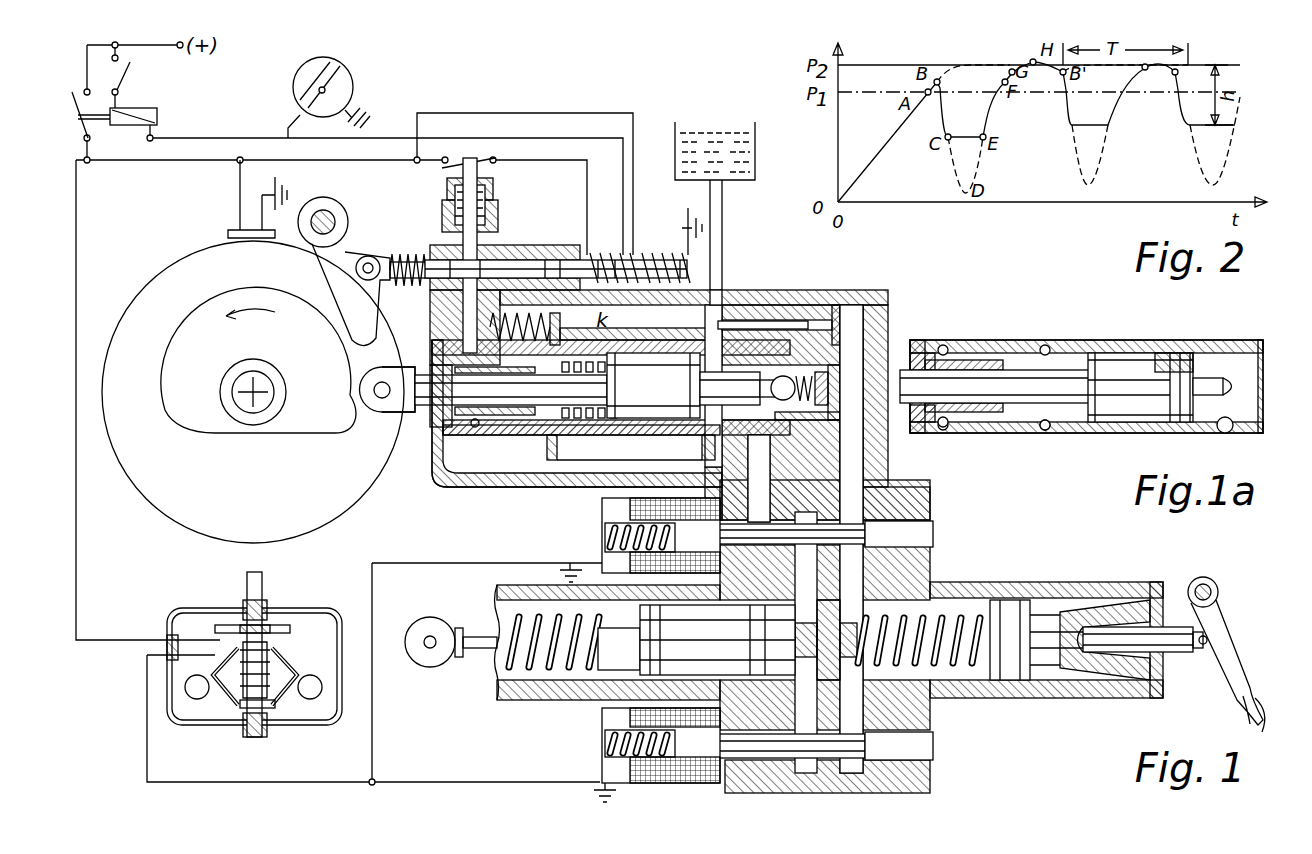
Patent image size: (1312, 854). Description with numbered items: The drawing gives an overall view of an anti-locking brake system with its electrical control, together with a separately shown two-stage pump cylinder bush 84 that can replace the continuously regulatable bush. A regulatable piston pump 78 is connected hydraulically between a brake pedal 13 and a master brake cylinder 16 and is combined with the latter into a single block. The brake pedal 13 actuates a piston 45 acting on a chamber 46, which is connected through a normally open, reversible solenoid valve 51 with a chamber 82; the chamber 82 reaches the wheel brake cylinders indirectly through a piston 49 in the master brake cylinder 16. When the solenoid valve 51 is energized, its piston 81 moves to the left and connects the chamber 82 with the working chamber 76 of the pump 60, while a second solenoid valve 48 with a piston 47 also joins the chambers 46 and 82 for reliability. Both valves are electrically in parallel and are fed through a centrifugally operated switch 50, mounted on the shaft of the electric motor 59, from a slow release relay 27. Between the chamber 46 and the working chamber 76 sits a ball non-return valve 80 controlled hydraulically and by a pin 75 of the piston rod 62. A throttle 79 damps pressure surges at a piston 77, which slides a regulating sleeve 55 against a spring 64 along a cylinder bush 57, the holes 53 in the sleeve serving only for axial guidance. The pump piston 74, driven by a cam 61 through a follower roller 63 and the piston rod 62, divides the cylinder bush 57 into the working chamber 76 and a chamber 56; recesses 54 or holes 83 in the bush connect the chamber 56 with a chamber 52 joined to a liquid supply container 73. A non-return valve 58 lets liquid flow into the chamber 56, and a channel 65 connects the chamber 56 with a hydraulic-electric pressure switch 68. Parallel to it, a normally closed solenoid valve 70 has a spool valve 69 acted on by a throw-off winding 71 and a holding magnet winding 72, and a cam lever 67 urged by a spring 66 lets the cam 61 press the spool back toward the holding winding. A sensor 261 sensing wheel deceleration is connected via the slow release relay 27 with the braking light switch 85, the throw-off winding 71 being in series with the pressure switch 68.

In FIG. 1, the braking light switch 85 is at (140, 76).
In FIG. 1, the slow release relay 27 is at (114, 122).
In FIG. 1, the sensor 261 is at (309, 97).
In FIG. 1, the electric motor 59 is at (360, 487).
In FIG. 1, the cam 61 is at (300, 410).
In FIG. 1, the cam lever 67 is at (352, 238).
In FIG. 1, the pump 60 is at (390, 427).
In FIG. 1, the follower roller 63 is at (393, 377).
In FIG. 1, the piston rod 62 is at (428, 392).
In FIG. 1, the spring 66 is at (403, 253).
In FIG. 1, the solenoid valve 70 is at (559, 242).
In FIG. 1, the channel 65 is at (470, 305).
In FIG. 1, the regulatable piston pump 78 is at (901, 288).
In FIG. 1, the throttle 79 is at (840, 323).
In FIG. 1, the spring 64 is at (485, 330).
In FIG. 1, the hydraulic-electric pressure switch 68 is at (447, 193).
In FIG. 1, the spool valve 69 is at (508, 257).
In FIG. 1, the throw-off winding 71 is at (603, 250).
In FIG. 1, the holding magnet winding 72 is at (651, 250).
In FIG. 1, the liquid supply container 73 is at (715, 195).
In FIG. 1, the cylinder bush 57 is at (472, 437).
In FIG. 1, the chamber 56 is at (540, 413).
In FIG. 1A, the chamber 56 is at (1027, 358).
In FIG. 1, the regulating sleeve 55 is at (553, 457).
In FIG. 1, the holes 53 is at (632, 447).
In FIG. 1, the chamber 52 is at (680, 470).
In FIG. 1, the non-return valve 58 is at (450, 458).
In FIG. 1A, the non-return valve 58 is at (945, 430).
In FIG. 1, the recesses 54 is at (602, 435).
In FIG. 1, the pin 75 is at (752, 366).
In FIG. 1, the pump piston 74 is at (728, 378).
In FIG. 1A, the pump piston 74 is at (1105, 363).
In FIG. 1, the working chamber 76 is at (792, 370).
In FIG. 1A, the working chamber 76 is at (1228, 360).
In FIG. 1, the piston 77 is at (812, 368).
In FIG. 1, the ball non-return valve 80 is at (792, 396).
In FIG. 1, the chamber 82 is at (805, 608).
In FIG. 1, the piston 81 is at (925, 522).
In FIG. 1, the piston 47 is at (938, 769).
In FIG. 1, the solenoid valve 51 is at (594, 543).
In FIG. 1, the second solenoid valve 48 is at (594, 762).
In FIG. 1, the master brake cylinder 16 is at (528, 670).
In FIG. 1, the piston 49 is at (607, 640).
In FIG. 1, the chamber 46 is at (945, 670).
In FIG. 1, the piston 45 is at (1047, 655).
In FIG. 1, the brake pedal 13 is at (1230, 698).
In FIG. 1, the centrifugally operated switch 50 is at (316, 610).
In FIG. 1A, the cylinder bush 84 is at (965, 340).
In FIG. 1A, the holes 83 is at (1045, 428).